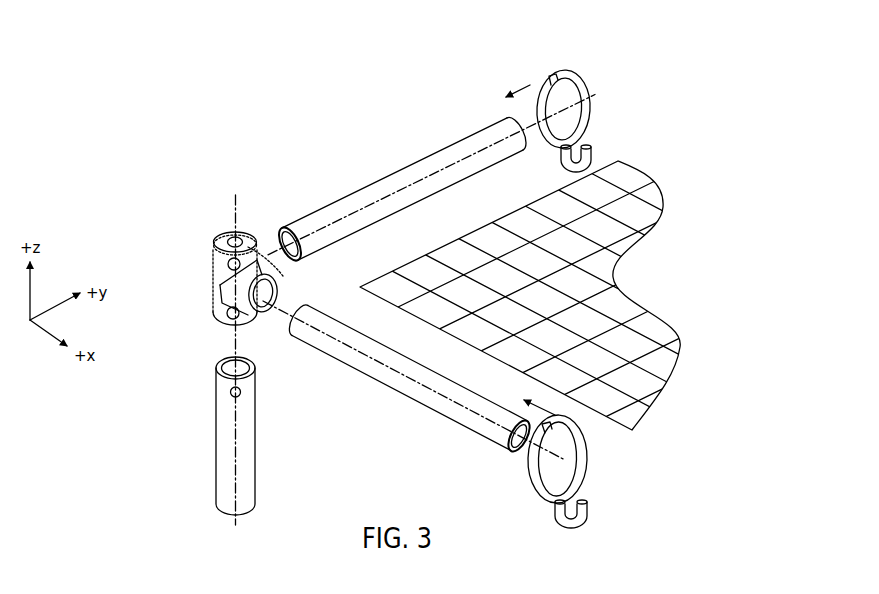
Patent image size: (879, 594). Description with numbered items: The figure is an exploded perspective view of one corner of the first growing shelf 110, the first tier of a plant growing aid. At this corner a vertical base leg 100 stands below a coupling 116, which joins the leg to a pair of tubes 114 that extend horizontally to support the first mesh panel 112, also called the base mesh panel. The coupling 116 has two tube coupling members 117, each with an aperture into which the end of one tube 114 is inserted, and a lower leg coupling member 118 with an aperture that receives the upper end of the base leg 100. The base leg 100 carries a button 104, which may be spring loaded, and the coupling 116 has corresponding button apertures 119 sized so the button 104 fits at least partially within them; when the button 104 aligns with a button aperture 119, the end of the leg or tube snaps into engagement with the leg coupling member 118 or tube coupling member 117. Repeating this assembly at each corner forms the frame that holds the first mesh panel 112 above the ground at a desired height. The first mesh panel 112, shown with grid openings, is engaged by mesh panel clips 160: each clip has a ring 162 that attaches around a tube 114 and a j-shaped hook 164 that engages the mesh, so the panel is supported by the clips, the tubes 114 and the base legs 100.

The base leg 100 is at (224, 360).
The button 104 is at (241, 392).
The first growing shelf 110 is at (619, 252).
The first mesh panel 112 is at (668, 202).
The tube 114 is at (400, 175).
The coupling 116 is at (235, 267).
The tube coupling member 117 is at (267, 247).
The leg coupling member 118 is at (216, 232).
The button aperture 119 is at (228, 263).
The mesh panel clip 160 is at (569, 278).
The ring 162 is at (589, 102).
The j-shaped hook 164 is at (591, 153).